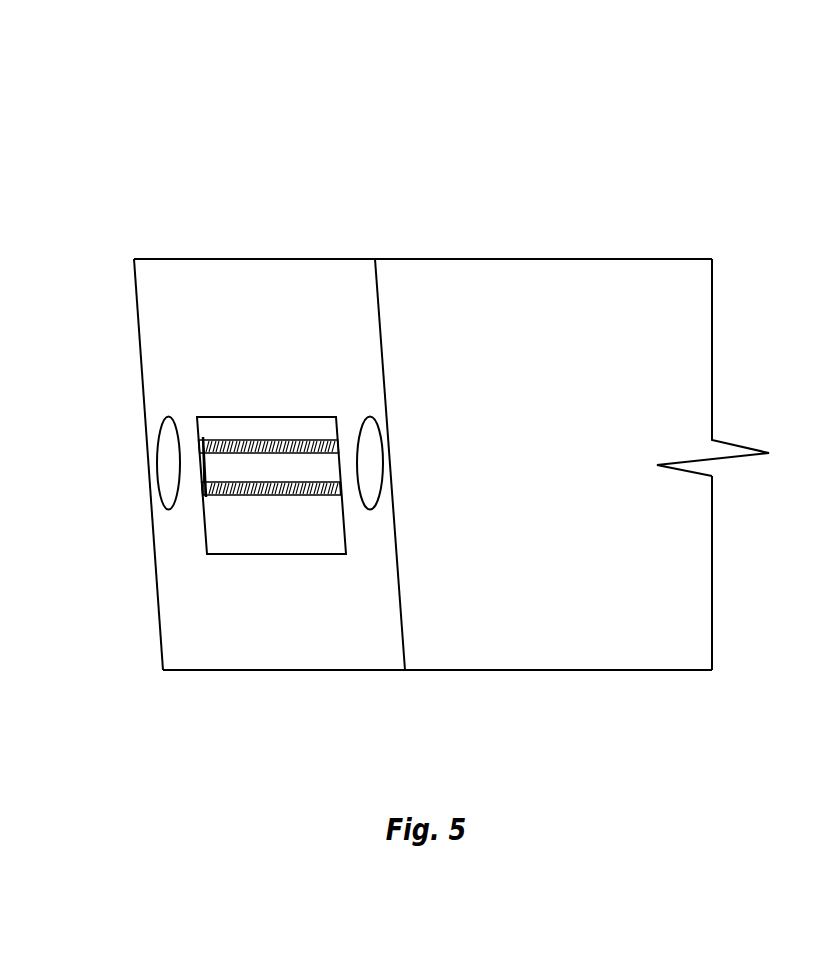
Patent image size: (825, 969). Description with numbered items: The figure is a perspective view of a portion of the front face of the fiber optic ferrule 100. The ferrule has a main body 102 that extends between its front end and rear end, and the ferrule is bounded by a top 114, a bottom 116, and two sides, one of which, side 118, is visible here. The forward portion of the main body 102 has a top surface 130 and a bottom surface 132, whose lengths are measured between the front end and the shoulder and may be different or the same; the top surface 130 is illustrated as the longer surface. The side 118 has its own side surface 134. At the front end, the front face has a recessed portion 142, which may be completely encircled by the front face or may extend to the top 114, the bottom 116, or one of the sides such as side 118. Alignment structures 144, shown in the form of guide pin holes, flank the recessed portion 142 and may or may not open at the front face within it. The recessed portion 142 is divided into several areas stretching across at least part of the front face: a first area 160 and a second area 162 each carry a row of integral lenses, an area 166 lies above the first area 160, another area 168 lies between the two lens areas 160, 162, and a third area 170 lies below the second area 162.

The fiber optic ferrule 100 is at (724, 146).
The main body 102 is at (652, 249).
The top 114 is at (418, 258).
The bottom 116 is at (535, 671).
The side 118 is at (609, 402).
The top surface 130 is at (481, 258).
The bottom surface 132 is at (653, 671).
The side surface 134 is at (693, 357).
The recessed portion 142 is at (345, 538).
The alignment structures 144 is at (152, 423).
The first area 160 is at (201, 445).
The second area 162 is at (199, 492).
The area above first area 166 is at (327, 427).
The area between lens areas 168 is at (215, 462).
The third area 170 is at (273, 543).